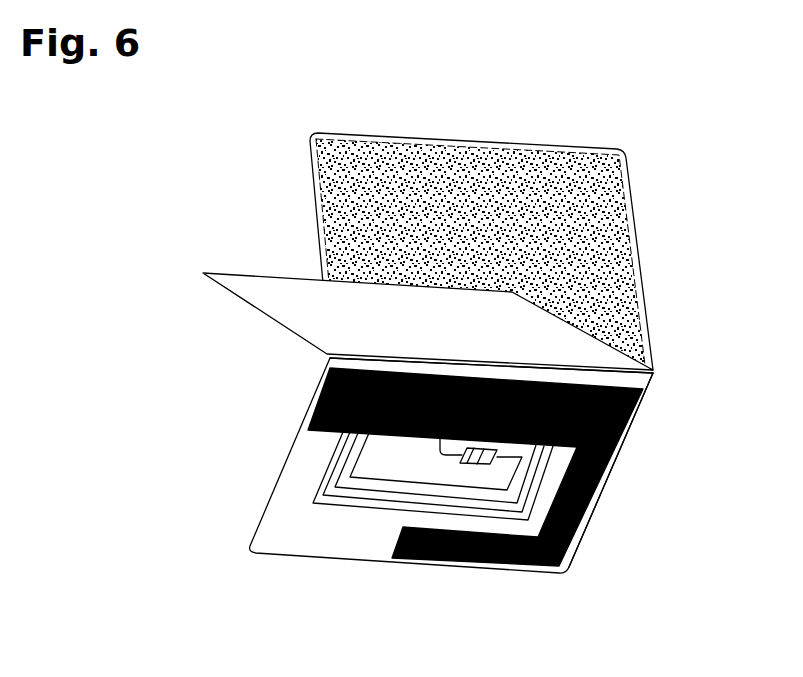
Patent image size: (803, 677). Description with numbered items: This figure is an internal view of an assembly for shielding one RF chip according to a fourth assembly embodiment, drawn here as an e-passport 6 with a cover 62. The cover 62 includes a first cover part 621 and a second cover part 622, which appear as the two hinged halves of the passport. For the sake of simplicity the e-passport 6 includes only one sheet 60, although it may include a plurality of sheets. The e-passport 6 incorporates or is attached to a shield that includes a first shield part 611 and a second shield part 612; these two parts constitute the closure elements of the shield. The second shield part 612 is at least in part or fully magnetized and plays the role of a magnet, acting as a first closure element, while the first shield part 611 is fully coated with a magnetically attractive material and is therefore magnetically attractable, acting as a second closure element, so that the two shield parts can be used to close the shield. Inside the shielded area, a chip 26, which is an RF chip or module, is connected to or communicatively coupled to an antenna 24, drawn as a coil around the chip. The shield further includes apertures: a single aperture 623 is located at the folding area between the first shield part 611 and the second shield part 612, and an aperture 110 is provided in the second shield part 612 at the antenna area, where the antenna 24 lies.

The e-passport 6 is at (282, 186).
The sheet 60 is at (567, 322).
The first shield part 611 is at (610, 183).
The first cover part 621 is at (640, 240).
The aperture 623 is at (640, 383).
The second shield part 612 is at (627, 422).
The second cover part 622 is at (590, 513).
The cover 62 is at (323, 562).
The aperture 110 is at (320, 453).
The chip 26 is at (459, 463).
The antenna 24 is at (313, 489).